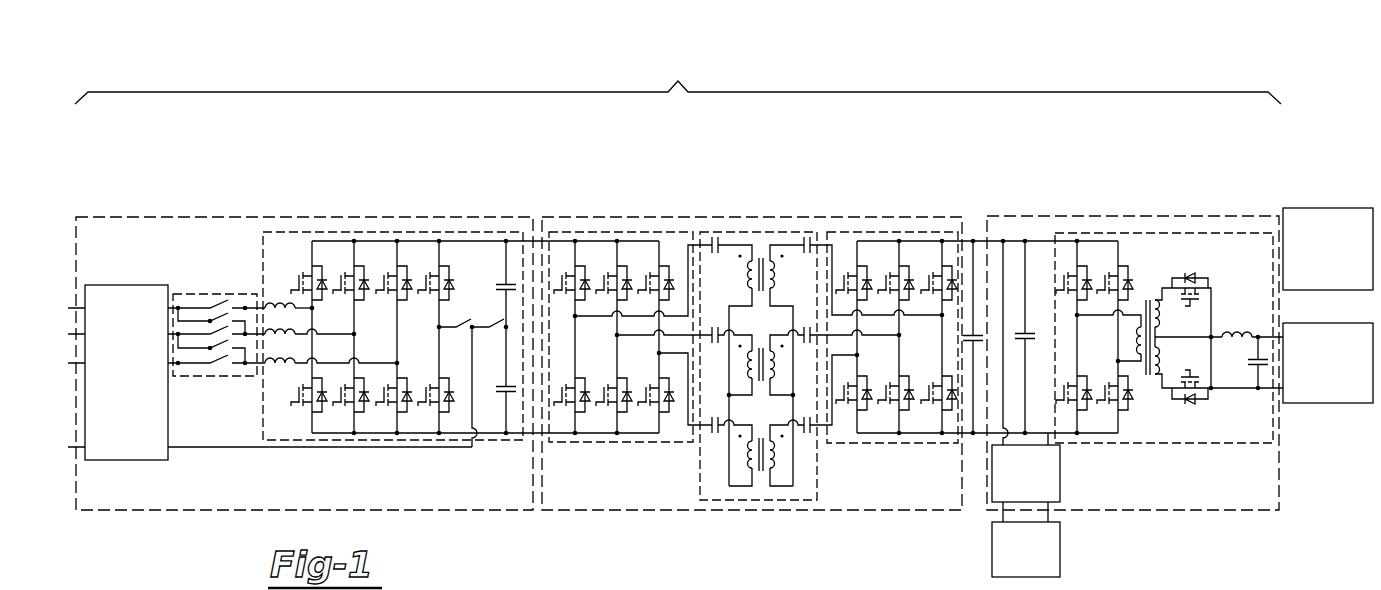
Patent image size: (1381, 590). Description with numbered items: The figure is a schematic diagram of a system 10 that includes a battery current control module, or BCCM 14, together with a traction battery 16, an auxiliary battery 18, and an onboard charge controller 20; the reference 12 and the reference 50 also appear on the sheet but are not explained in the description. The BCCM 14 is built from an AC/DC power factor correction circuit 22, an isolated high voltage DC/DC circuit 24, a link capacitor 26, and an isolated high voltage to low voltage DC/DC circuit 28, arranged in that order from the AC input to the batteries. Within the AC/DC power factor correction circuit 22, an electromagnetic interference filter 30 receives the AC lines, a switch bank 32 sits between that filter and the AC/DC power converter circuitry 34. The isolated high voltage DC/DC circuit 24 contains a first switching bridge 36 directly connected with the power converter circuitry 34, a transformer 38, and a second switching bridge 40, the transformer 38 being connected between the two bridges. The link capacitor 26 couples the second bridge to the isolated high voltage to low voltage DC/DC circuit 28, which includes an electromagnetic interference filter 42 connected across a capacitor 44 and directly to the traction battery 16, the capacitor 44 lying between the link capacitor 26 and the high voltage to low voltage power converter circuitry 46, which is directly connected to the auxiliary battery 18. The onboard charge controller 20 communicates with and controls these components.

The system 10 is at (133, 80).
The vehicle 12 is at (1225, 586).
The BCCM 14 is at (678, 77).
The traction battery 16 is at (1060, 548).
The auxiliary battery 18 is at (1328, 403).
The onboard charge controller 20 is at (1328, 208).
The AC/DC power factor correction circuit 22 is at (305, 215).
The isolated high voltage DC/DC circuit 24 is at (752, 217).
The link capacitor 26 is at (965, 339).
The isolated high voltage to low voltage DC/DC circuit 28 is at (1132, 216).
The electromagnetic interference filter 30 is at (124, 285).
The switch bank 32 is at (214, 294).
The AC/DC power converter circuitry 34 is at (395, 232).
The first switching bridge 36 is at (620, 442).
The transformer 38 is at (760, 500).
The second switching bridge 40 is at (892, 443).
The electromagnetic interference filter 42 is at (1060, 472).
The capacitor 44 is at (1030, 340).
The high voltage to low voltage power converter circuitry 46 is at (1165, 233).
The controller 50 is at (708, 589).